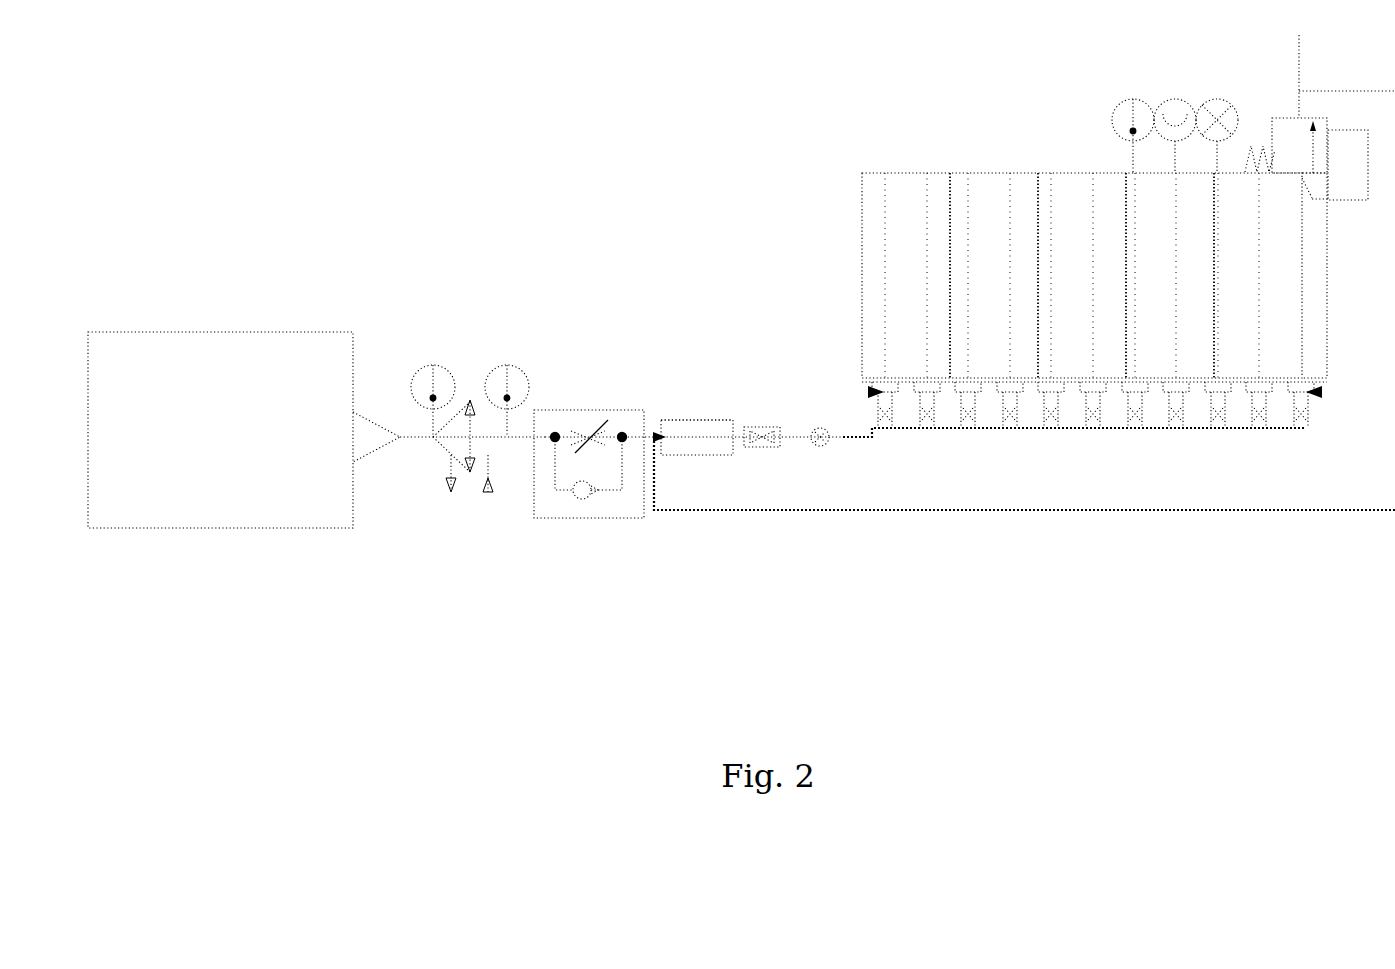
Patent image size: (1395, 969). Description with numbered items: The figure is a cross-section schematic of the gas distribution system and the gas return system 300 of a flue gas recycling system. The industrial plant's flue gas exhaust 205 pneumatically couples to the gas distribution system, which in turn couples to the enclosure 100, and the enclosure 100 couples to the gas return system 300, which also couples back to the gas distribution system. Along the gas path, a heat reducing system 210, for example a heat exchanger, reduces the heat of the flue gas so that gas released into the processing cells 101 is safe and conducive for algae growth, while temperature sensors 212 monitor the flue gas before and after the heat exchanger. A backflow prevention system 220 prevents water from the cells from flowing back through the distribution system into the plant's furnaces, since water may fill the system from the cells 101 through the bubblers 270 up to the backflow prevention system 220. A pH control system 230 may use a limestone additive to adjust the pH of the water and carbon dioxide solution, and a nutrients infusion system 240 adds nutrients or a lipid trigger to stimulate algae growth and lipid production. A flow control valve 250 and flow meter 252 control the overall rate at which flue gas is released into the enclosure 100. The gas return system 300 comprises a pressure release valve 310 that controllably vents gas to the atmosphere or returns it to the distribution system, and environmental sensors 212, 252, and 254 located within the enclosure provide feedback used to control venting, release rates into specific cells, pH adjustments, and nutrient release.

The enclosure 100 is at (1094, 265).
The processing cells 101 is at (1079, 275).
The flue gas exhaust 205 is at (244, 430).
The heat reducing system 210 is at (463, 446).
The temperature sensors 212 is at (781, 259).
The backflow prevention system 220 is at (589, 464).
The pH control system 230 is at (621, 421).
The nutrients infusion system 240 is at (693, 448).
The flow control valve 250 is at (763, 447).
The flow meter 252 is at (1000, 274).
The environmental sensor 254 is at (1217, 127).
The bubblers 270 is at (868, 392).
The gas return system 300 is at (1347, 76).
The pressure release valve 310 is at (1306, 148).